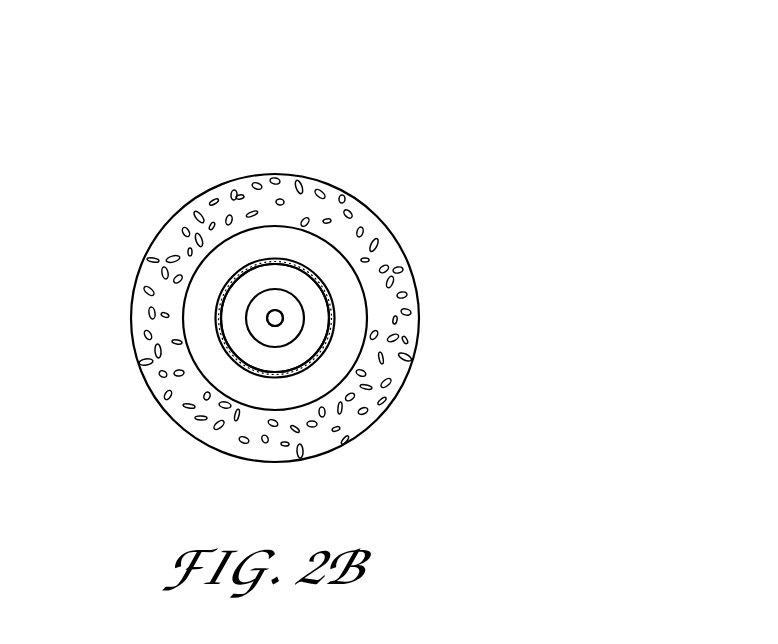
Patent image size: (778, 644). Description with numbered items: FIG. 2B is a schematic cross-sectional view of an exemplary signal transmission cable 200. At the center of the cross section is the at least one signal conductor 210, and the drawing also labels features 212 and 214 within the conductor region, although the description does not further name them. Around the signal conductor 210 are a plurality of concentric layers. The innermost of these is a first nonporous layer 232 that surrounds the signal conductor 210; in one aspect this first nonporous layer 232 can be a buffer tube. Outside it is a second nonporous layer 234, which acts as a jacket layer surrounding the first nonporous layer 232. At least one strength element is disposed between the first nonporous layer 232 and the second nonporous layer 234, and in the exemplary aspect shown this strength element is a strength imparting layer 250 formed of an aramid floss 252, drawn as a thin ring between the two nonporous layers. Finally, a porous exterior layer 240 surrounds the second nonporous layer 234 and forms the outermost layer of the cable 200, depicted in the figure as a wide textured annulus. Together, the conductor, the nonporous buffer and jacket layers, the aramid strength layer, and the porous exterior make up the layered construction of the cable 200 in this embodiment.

The signal transmission cable 200 is at (395, 116).
The signal conductor 210 is at (322, 325).
The central lumen 212 is at (277, 323).
The central wire 214 is at (257, 327).
The first nonporous layer 232 is at (232, 322).
The second nonporous layer 234 is at (350, 282).
The porous exterior layer 240 is at (368, 207).
The strength imparting layer 250 is at (210, 281).
The aramid floss 252 is at (255, 262).